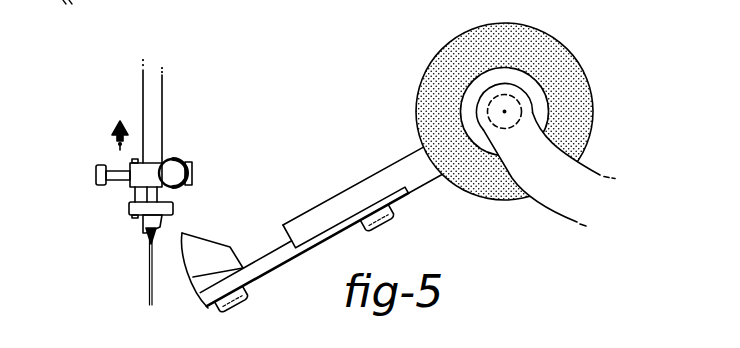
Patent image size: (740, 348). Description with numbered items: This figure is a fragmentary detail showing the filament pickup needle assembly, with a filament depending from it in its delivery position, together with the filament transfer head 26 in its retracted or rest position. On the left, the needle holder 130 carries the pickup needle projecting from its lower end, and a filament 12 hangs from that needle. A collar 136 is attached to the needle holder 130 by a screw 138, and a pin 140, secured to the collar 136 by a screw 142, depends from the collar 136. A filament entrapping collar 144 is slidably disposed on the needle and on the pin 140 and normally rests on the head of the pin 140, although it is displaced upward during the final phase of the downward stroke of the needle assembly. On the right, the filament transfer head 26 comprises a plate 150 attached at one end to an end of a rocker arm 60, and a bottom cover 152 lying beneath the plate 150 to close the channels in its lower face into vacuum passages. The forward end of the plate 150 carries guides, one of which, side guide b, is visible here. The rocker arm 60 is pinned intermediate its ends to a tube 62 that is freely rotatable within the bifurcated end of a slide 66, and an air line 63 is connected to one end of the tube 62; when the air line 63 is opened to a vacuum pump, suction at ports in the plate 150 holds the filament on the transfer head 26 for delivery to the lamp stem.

The needle 12 is at (149, 277).
The filament transfer head 26 is at (302, 203).
The rocker arm 60 is at (429, 189).
The tube 62 is at (516, 95).
The air line 63 is at (546, 206).
The slide 66 is at (500, 24).
The needle holder 130 is at (164, 106).
The collar 136 is at (193, 173).
The screw 138 is at (180, 160).
The pin 140 is at (131, 192).
The screw 142 is at (96, 173).
The filament entrapping collar 144 is at (173, 209).
The plate 150 is at (357, 185).
The bottom cover 152 is at (320, 242).
The side guide b is at (207, 240).